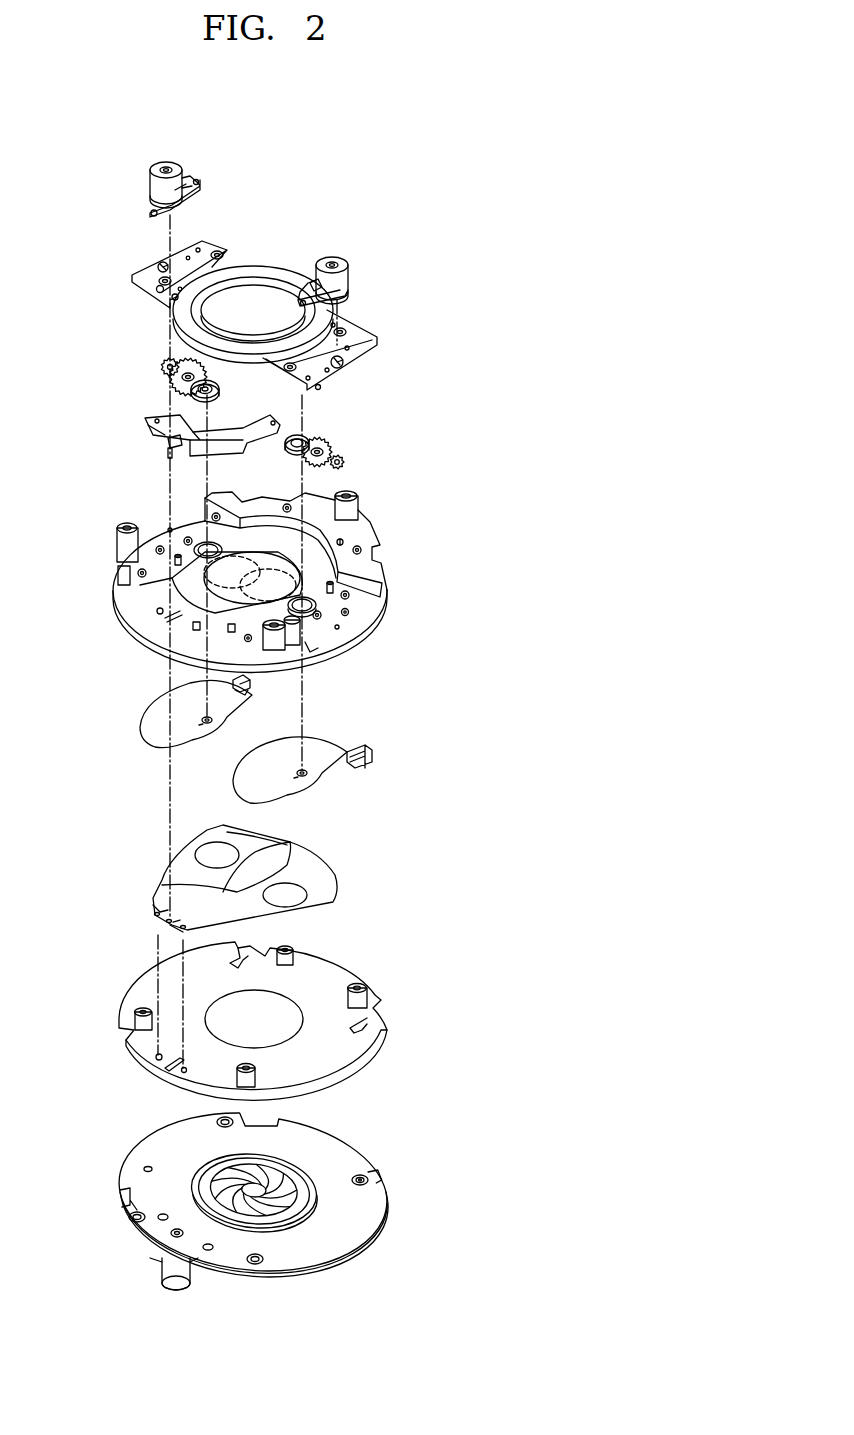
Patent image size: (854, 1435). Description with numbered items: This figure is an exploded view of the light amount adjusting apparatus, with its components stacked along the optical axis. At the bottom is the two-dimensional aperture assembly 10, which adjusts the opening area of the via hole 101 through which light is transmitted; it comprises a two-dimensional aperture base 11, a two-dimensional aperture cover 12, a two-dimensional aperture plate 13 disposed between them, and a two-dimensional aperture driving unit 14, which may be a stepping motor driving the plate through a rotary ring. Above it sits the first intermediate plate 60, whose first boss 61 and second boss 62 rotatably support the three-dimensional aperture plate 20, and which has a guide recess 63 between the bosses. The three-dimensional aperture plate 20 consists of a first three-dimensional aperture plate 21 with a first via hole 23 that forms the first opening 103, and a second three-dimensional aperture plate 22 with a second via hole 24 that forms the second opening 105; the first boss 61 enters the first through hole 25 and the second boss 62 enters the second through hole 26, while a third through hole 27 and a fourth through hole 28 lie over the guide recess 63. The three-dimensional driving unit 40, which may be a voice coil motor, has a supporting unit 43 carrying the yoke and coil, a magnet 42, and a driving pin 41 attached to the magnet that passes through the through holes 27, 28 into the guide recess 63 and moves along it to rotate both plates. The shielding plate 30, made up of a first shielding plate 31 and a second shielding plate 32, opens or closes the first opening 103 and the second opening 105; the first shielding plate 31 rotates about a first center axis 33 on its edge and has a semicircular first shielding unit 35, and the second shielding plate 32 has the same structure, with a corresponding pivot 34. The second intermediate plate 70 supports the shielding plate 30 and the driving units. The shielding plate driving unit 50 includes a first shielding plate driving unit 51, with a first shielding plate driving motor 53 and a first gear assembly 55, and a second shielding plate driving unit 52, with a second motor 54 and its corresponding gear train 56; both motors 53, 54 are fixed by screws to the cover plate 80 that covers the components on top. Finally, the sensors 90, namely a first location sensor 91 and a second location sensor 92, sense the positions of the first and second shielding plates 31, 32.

The 2D aperture assembly 10 is at (395, 1172).
The 2D aperture base 11 is at (357, 1253).
The 2D aperture cover 12 is at (365, 1160).
The 2D aperture plate 13 is at (297, 1197).
The 2D aperture driving unit 14 is at (160, 1273).
The via hole 101 is at (217, 1168).
The 3D aperture plate 20 is at (327, 853).
The first 3D aperture plate 21 is at (187, 870).
The second 3D aperture plate 22 is at (330, 890).
The first via hole 23 is at (210, 852).
The second via hole 24 is at (300, 890).
The first through hole 25 is at (157, 913).
The second through hole 26 is at (183, 927).
The third through hole 27 is at (167, 920).
The fourth through hole 28 is at (150, 915).
The shielding plate 30 is at (68, 690).
The first shielding plate 31 is at (150, 718).
The second shielding plate 32 is at (243, 775).
The first center axis 33 is at (217, 717).
The blade pivot hole 34 is at (318, 780).
The first shielding unit 35 is at (190, 698).
The 3D driving unit 40 is at (65, 422).
The driving pin 41 is at (170, 453).
The magnet 42 is at (173, 445).
The supporting unit 43 is at (163, 423).
The shielding plate driving unit 50 is at (447, 143).
The first shielding plate driving unit 51 is at (307, 154).
The second shielding plate driving unit 52 is at (462, 195).
The first shielding plate driving motor 53 is at (197, 180).
The shielding plate driving motor 54 is at (347, 267).
The first gear assembly 55 is at (190, 375).
The second gear train 56 is at (328, 445).
The first intermediate plate 60 is at (353, 1060).
The first boss 61 is at (158, 1057).
The second boss 62 is at (183, 1070).
The guide recess 63 is at (170, 1063).
The second intermediate plate 70 is at (373, 542).
The first opening 103 is at (130, 598).
The second opening 105 is at (397, 600).
The cover plate 80 is at (147, 280).
The sensors 90 is at (425, 685).
The first location sensor 91 is at (250, 687).
The second location sensor 92 is at (372, 755).